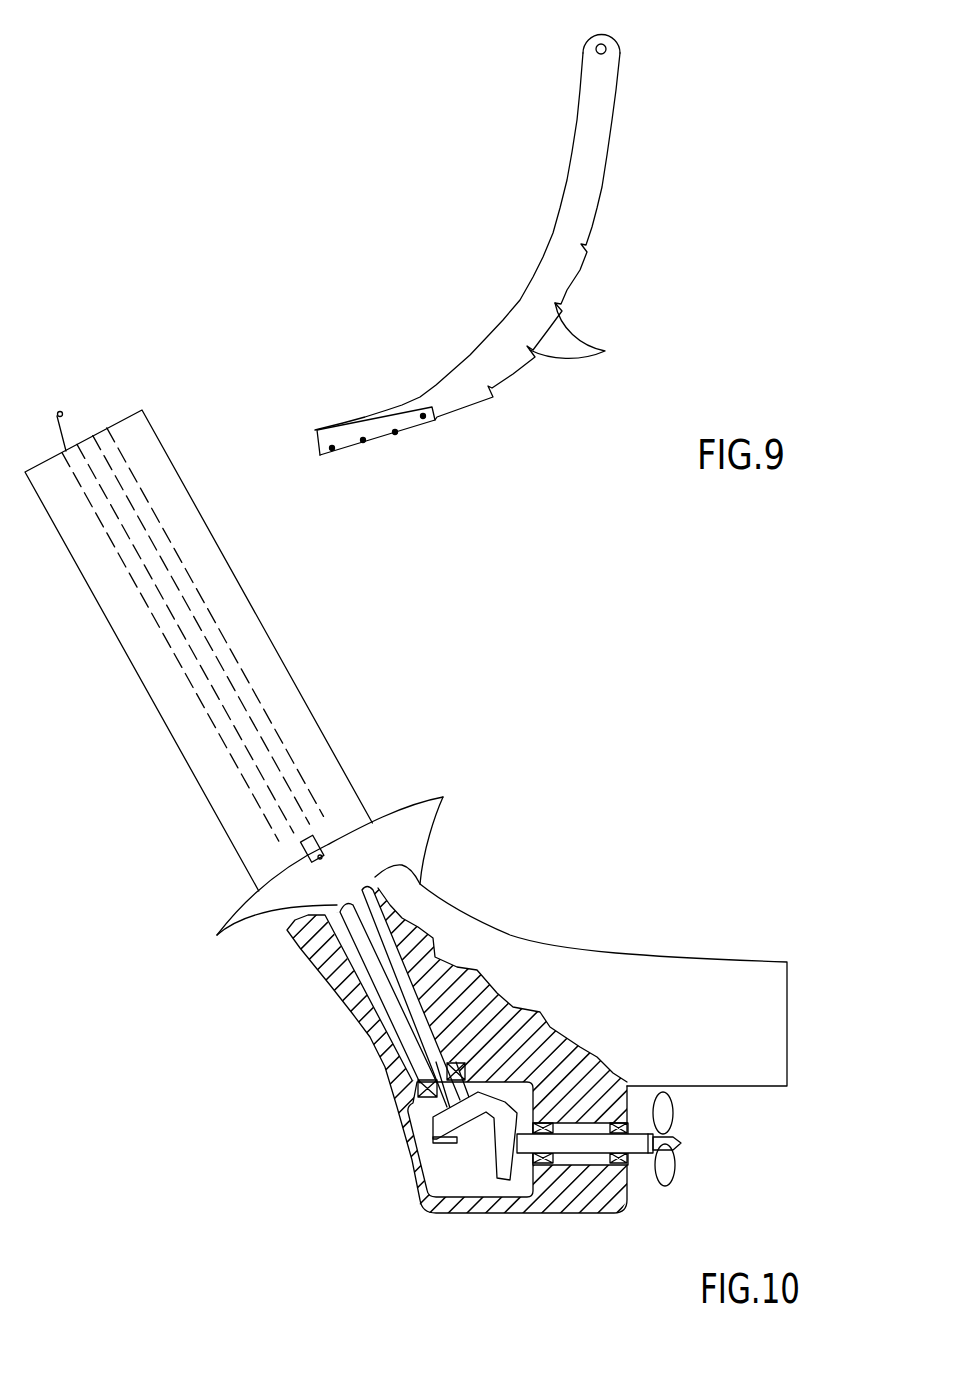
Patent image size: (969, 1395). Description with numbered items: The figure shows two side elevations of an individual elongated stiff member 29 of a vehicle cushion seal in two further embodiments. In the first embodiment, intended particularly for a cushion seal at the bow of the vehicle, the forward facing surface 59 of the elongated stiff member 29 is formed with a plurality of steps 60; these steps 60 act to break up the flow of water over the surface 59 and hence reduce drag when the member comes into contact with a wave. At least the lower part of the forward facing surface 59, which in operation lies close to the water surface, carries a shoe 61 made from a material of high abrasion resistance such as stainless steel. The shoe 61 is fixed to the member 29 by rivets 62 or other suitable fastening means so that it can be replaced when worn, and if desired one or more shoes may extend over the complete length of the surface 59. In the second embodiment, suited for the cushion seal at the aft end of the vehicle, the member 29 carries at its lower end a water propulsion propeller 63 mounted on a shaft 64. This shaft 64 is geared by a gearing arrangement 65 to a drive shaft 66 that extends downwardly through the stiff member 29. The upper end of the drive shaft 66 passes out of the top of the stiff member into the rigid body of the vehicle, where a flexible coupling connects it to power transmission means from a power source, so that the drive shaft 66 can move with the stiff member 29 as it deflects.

In FIG. 9, the elongated stiff member 29 is at (552, 261).
In FIG. 10, the elongated stiff member 29 is at (443, 797).
In FIG. 9, the forward facing surface 59 is at (595, 231).
In FIG. 9, the steps 60 is at (606, 351).
In FIG. 9, the shoe 61 is at (378, 435).
In FIG. 9, the rivets 62 is at (333, 449).
In FIG. 10, the water propulsion propeller 63 is at (677, 1160).
In FIG. 10, the shaft 64 is at (638, 1145).
In FIG. 10, the gearing arrangement 65 is at (497, 1157).
In FIG. 10, the drive shaft 66 is at (217, 935).